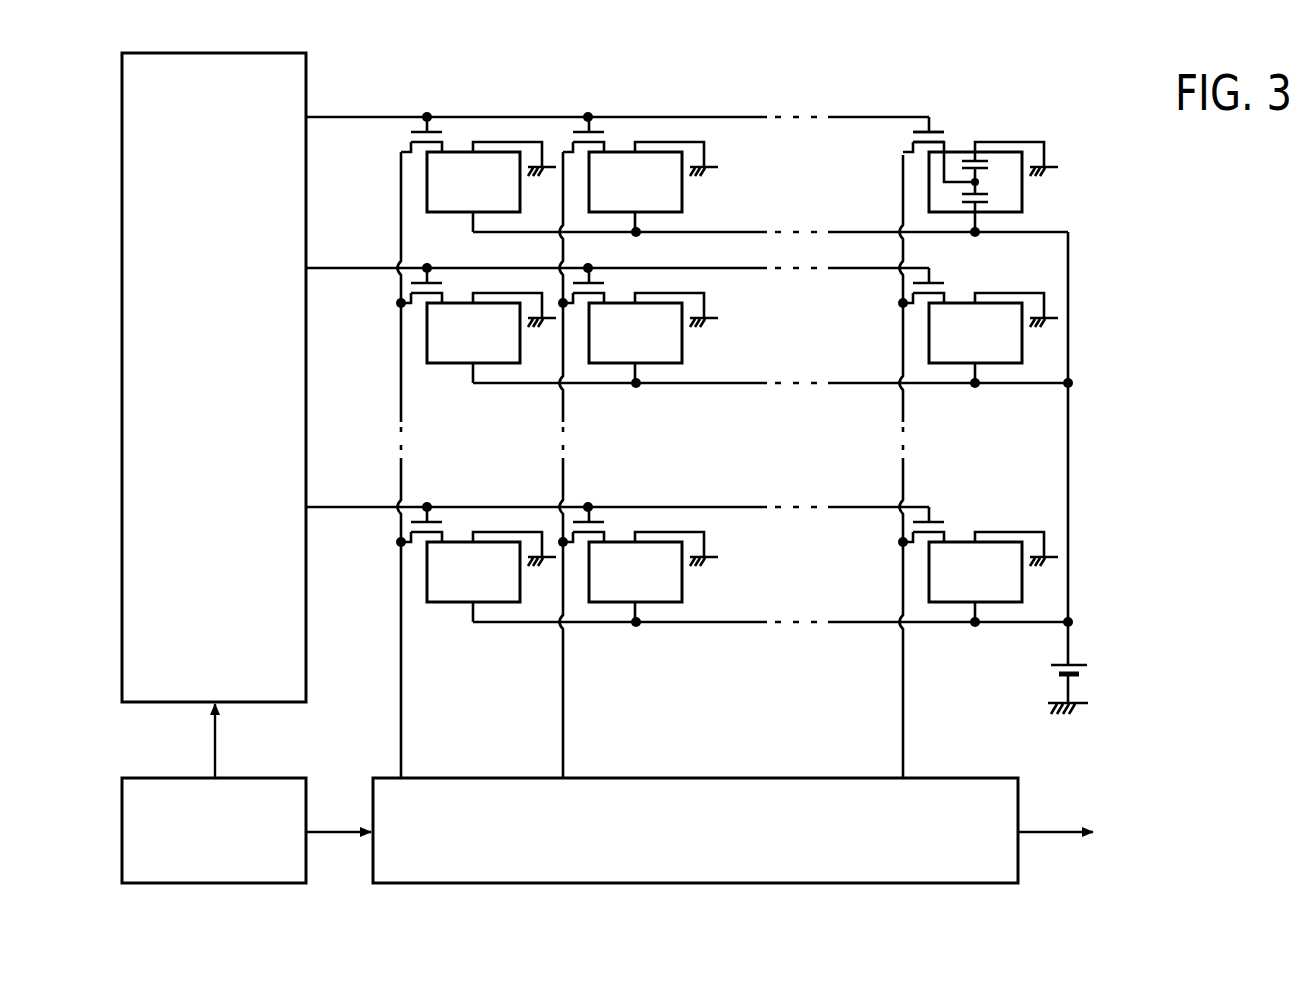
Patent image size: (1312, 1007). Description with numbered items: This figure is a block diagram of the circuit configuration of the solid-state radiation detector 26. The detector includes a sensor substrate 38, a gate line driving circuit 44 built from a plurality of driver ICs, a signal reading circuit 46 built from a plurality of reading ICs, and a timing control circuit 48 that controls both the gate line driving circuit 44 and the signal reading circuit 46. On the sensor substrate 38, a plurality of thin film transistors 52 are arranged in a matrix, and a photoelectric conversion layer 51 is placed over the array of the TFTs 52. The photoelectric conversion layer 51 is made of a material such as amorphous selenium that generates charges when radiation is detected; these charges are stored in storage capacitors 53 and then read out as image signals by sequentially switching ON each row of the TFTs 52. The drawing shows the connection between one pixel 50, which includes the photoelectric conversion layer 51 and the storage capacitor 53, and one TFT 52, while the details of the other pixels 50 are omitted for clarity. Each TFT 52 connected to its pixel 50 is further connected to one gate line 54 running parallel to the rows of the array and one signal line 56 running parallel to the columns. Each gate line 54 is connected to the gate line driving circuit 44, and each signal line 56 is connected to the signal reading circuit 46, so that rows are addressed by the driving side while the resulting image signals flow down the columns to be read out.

The solid-state radiation detector 26 is at (1184, 335).
The sensor substrate 38 is at (697, 412).
The gate line driving circuit 44 is at (276, 52).
The signal reading circuit 46 is at (988, 777).
The timing control circuit 48 is at (278, 777).
The pixel 50 is at (682, 203).
The photoelectric conversion layer 51 is at (990, 195).
The thin film transistor 52 is at (908, 136).
The storage capacitor 53 is at (995, 163).
The gate line 54 is at (864, 117).
The signal line 56 is at (903, 184).